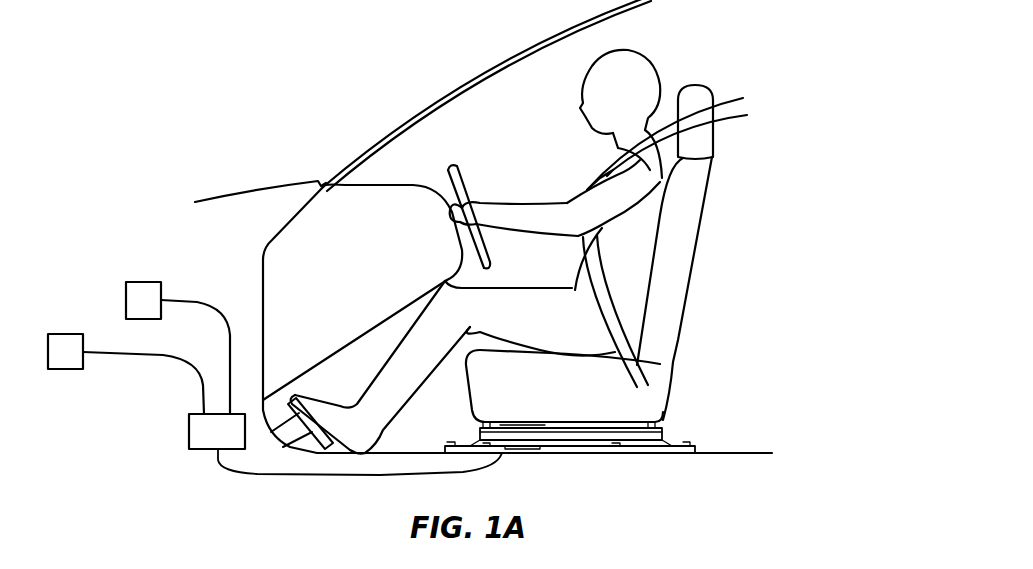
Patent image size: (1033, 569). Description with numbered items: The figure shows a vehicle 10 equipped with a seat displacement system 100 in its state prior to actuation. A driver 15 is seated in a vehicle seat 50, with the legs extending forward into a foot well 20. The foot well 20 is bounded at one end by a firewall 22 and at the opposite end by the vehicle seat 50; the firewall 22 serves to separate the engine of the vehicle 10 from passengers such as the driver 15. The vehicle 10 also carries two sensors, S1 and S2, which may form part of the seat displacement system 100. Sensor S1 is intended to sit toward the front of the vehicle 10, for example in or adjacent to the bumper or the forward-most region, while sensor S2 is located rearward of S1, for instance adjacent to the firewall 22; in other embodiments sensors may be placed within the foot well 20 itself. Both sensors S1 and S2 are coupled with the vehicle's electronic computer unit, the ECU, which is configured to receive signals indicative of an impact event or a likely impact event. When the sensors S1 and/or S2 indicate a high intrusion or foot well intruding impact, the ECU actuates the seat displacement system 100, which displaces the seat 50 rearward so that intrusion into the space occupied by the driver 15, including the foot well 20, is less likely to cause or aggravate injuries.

The vehicle 10 is at (328, 153).
The foot well 20 is at (361, 379).
The firewall 22 is at (280, 412).
The driver 15 is at (632, 293).
The vehicle seat 50 is at (683, 250).
The seat displacement system 100 is at (697, 424).
The sensor S1 is at (126, 374).
The sensor S2 is at (178, 348).
The electronic computer unit ECU is at (345, 444).